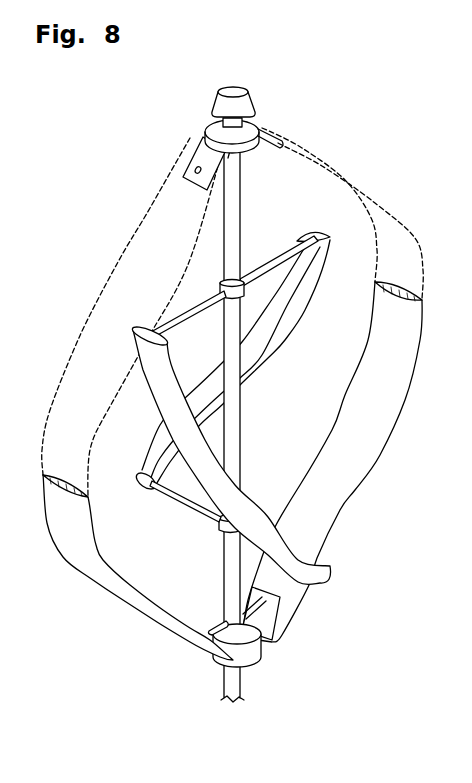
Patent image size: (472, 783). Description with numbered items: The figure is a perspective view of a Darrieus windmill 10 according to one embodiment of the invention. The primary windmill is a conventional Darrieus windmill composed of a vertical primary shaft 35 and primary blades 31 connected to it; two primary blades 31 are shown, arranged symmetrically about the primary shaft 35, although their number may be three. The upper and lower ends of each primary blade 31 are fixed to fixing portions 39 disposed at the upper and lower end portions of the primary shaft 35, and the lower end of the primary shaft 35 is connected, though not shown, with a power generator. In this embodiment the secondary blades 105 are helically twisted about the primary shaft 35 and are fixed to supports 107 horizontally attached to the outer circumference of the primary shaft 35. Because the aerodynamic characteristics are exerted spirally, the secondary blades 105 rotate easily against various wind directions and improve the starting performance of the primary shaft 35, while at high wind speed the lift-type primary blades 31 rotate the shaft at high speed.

The Darrieus windmill 10 is at (98, 119).
The fixing portion 39 is at (252, 122).
The support 107 is at (283, 222).
The primary shaft 35 is at (236, 427).
The secondary blade 105 is at (293, 540).
The primary blade 31 is at (135, 602).